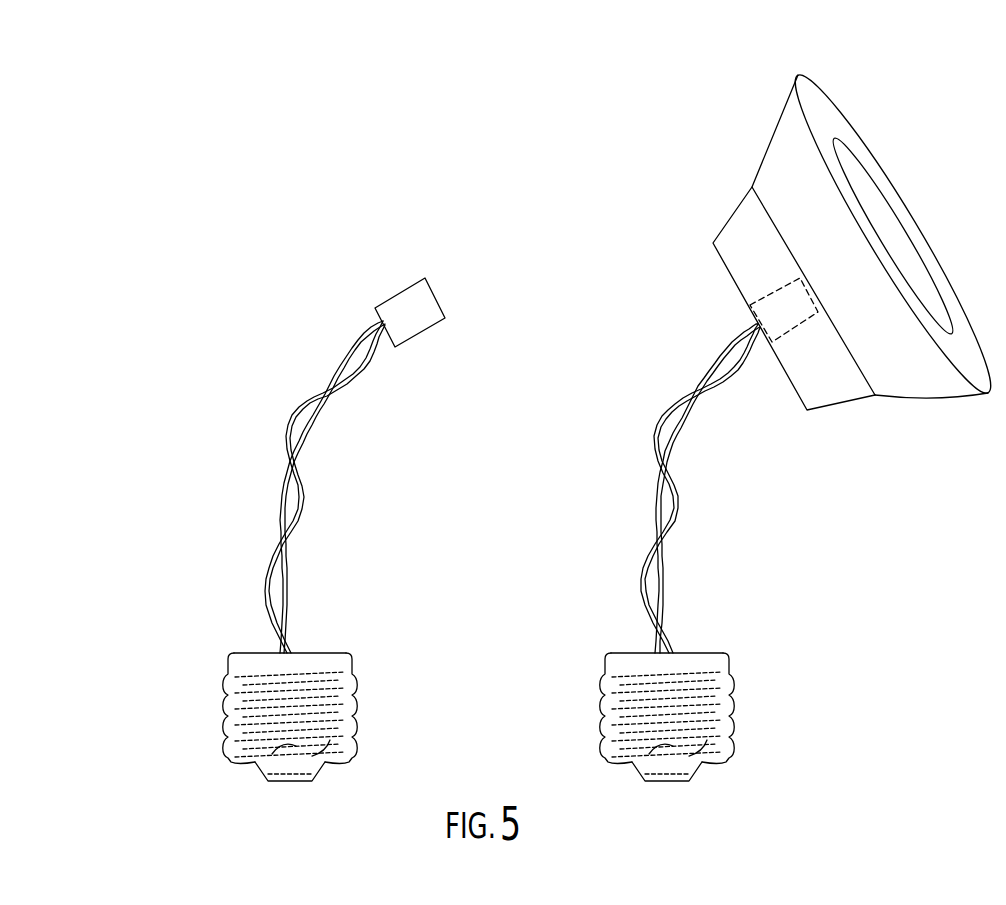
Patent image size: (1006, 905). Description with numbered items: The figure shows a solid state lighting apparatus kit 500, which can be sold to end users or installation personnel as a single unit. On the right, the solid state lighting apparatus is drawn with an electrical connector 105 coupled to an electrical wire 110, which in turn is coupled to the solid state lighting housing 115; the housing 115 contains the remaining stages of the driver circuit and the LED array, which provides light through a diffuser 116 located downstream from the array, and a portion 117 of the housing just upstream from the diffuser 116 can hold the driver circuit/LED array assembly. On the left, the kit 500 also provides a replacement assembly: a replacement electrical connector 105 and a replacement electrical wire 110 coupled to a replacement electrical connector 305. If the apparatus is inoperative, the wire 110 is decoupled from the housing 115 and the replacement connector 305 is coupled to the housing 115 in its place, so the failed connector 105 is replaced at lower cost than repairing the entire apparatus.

The solid state lighting apparatus kit 500 is at (821, 262).
The electrical connector 105 is at (228, 718).
The electrical wire 110 is at (355, 405).
The replacement electrical connector 305 is at (407, 296).
The solid state lighting housing 115 is at (742, 198).
The diffuser 116 is at (903, 223).
The portion of the housing 117 is at (912, 397).